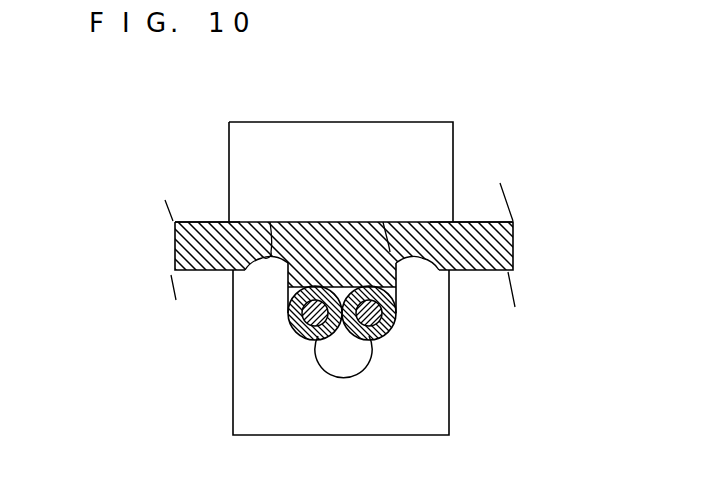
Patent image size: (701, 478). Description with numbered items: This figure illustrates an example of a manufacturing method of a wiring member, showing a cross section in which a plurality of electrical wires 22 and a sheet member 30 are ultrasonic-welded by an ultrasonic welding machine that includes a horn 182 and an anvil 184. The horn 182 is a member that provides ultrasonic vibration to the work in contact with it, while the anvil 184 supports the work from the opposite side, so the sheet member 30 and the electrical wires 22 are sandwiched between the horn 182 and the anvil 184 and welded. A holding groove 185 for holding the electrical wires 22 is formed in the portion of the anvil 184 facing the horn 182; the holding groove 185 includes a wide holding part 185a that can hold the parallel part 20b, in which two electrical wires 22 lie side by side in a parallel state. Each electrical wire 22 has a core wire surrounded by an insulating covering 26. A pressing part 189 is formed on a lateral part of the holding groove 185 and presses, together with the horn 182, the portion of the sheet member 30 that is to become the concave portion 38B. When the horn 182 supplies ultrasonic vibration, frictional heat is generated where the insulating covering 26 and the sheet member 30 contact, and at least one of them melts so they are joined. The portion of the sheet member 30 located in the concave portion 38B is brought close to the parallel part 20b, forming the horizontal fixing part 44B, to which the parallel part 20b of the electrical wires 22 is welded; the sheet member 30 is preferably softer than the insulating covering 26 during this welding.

The sheet member 30 is at (470, 221).
The horn 182 is at (229, 128).
The anvil 184 is at (233, 422).
The pressing part 189 is at (218, 220).
The concave portion 38B is at (270, 222).
The horizontal fixing part 44B is at (400, 283).
The holding groove 185 is at (287, 277).
The wide holding part 185a is at (287, 307).
The insulating covering 26 is at (289, 326).
The electrical wire 22 is at (293, 334).
The parallel part 20b is at (346, 338).